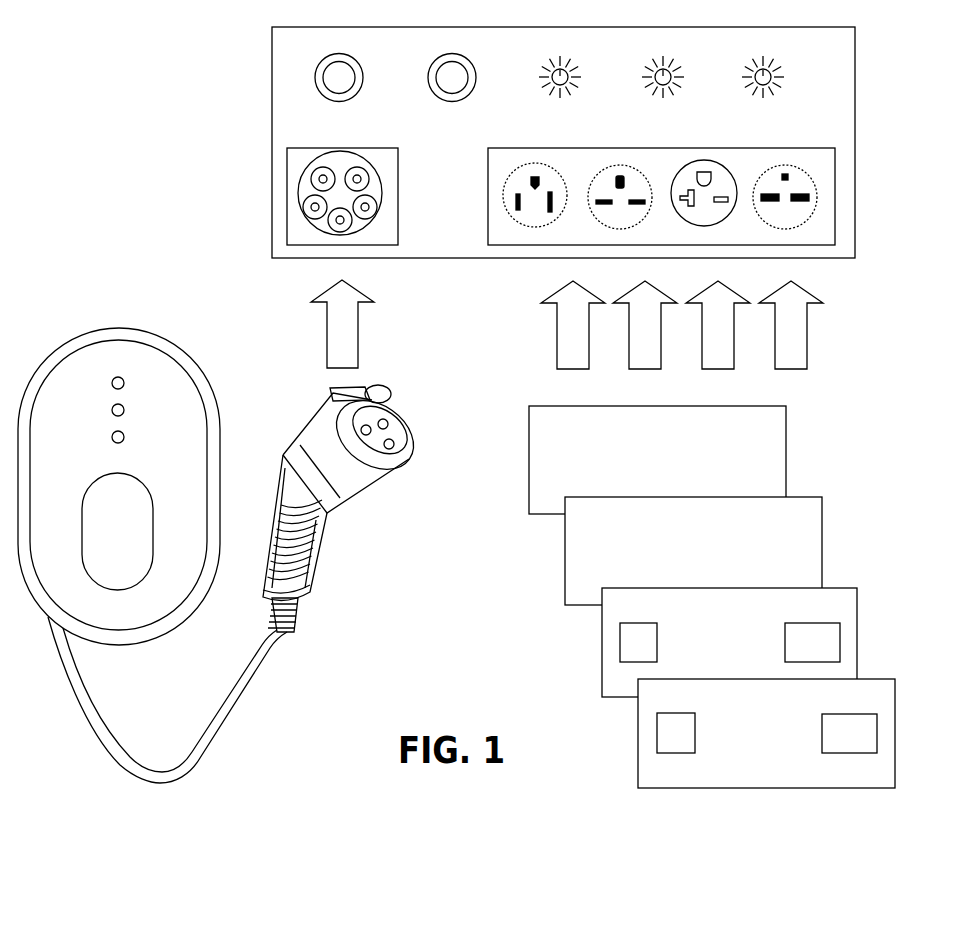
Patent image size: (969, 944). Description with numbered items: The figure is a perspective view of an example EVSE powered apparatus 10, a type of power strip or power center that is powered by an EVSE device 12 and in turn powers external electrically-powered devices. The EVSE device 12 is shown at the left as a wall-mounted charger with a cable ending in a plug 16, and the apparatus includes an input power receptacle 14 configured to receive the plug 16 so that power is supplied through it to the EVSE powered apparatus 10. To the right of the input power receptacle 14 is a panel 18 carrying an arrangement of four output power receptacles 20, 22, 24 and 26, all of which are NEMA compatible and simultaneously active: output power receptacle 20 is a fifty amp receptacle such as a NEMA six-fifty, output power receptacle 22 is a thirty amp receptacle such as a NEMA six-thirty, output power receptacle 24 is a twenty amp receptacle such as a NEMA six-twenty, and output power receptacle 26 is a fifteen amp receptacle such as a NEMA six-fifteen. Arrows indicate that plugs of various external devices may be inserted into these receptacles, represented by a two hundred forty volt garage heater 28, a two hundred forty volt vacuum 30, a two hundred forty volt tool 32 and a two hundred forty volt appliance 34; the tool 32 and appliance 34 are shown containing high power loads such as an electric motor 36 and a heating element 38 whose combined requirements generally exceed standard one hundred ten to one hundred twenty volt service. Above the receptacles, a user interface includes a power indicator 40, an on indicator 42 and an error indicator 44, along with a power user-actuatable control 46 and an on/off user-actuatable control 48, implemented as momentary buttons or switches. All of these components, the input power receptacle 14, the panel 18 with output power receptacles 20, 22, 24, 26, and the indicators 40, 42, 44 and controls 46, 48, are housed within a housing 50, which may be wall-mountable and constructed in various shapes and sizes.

The EVSE powered apparatus 10 is at (220, 54).
The EVSE device 12 is at (105, 338).
The input power receptacle 14 is at (299, 183).
The plug 16 is at (312, 582).
The panel 18 is at (488, 198).
The output power receptacle 20 is at (518, 222).
The output power receptacle 22 is at (600, 223).
The output power receptacle 24 is at (730, 175).
The output power receptacle 26 is at (813, 190).
The external electrically-powered device 28 is at (529, 447).
The external electrically-powered device 30 is at (565, 572).
The tool 32 is at (602, 680).
The appliance 34 is at (638, 779).
The electric motor 36 is at (630, 662).
The heating element 38 is at (840, 647).
The power indicator 40 is at (557, 62).
The on indicator 42 is at (660, 62).
The error indicator 44 is at (760, 62).
The power user-actuatable control 46 is at (352, 57).
The on/off user-actuatable control 48 is at (465, 57).
The housing 50 is at (272, 243).